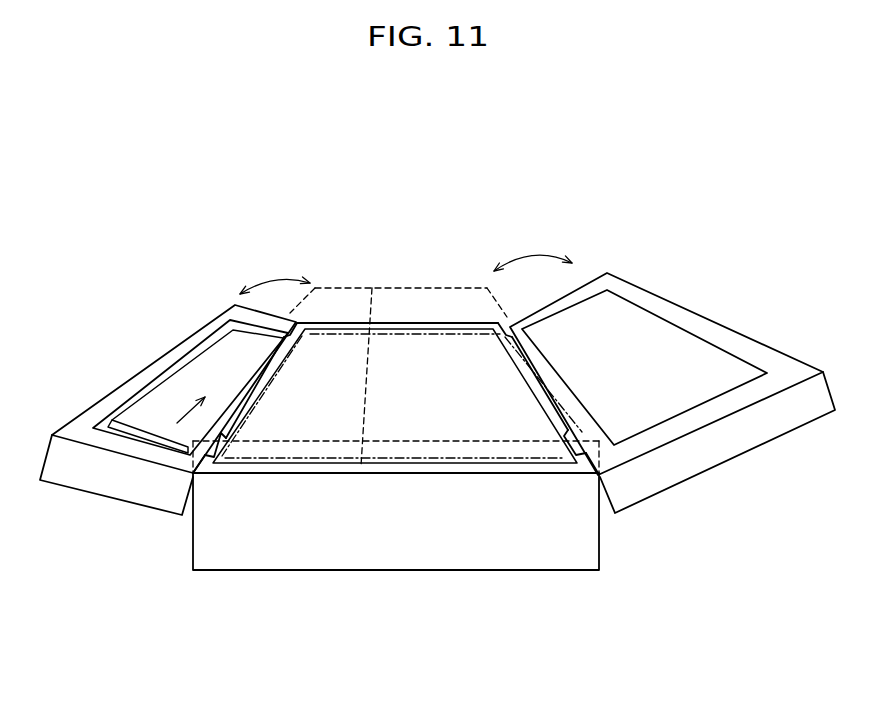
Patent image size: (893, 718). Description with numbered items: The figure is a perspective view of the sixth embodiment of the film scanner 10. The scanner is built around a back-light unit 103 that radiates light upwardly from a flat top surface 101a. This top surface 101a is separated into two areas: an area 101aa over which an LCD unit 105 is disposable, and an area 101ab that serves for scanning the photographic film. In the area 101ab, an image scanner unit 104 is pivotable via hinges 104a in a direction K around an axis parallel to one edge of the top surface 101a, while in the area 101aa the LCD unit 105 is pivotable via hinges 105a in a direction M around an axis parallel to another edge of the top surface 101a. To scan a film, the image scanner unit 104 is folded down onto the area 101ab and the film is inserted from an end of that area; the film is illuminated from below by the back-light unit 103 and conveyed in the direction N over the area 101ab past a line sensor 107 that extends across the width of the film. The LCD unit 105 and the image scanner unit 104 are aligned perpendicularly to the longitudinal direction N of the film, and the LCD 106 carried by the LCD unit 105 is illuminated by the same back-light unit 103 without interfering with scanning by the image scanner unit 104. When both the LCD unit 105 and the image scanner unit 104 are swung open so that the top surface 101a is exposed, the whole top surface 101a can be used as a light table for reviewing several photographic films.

The film scanner 10 is at (440, 228).
The top surface 101a is at (395, 330).
The area 101aa is at (458, 395).
The area 101ab is at (328, 395).
The back-light unit 103 is at (423, 365).
The image scanner unit 104 is at (174, 348).
The hinges 104a is at (293, 350).
The LCD unit 105 is at (683, 304).
The hinges 105a is at (512, 338).
The LCD 106 is at (652, 410).
The line sensor 107 is at (102, 425).
The direction K is at (275, 274).
The direction M is at (533, 252).
The direction N is at (185, 408).